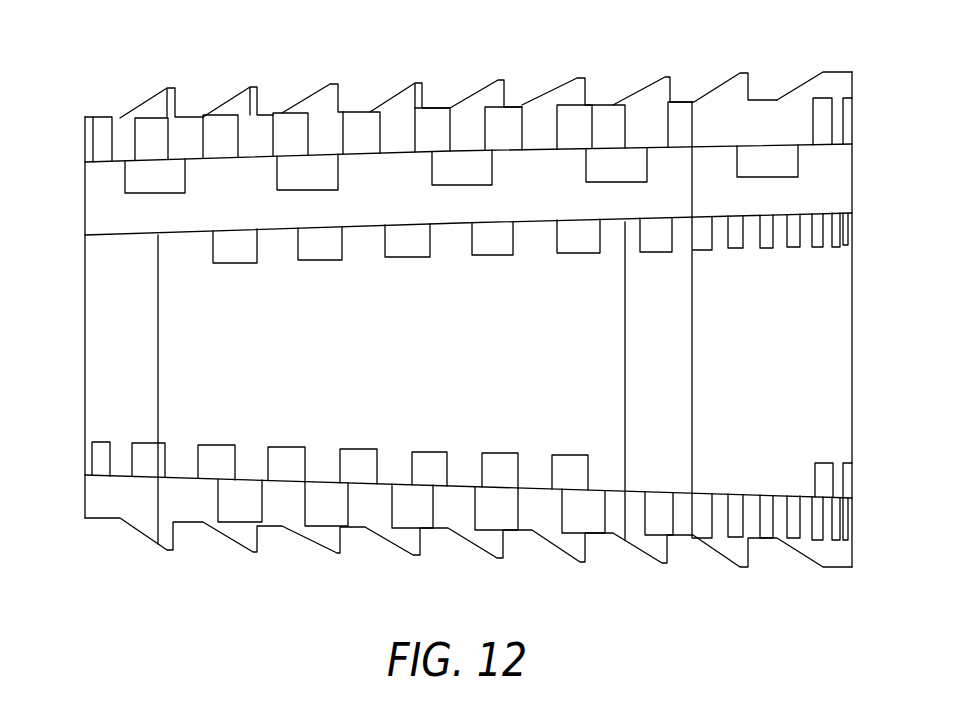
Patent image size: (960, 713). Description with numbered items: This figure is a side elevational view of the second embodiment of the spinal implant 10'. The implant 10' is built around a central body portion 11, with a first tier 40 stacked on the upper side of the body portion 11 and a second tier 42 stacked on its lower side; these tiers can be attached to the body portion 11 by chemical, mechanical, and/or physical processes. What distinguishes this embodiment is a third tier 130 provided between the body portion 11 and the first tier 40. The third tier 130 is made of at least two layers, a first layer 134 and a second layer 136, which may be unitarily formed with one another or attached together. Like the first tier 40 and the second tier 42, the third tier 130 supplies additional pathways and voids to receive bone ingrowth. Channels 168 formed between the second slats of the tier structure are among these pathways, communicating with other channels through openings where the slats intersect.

The implant 10' is at (472, 611).
The body portion 11 is at (853, 369).
The first tier 40 is at (853, 95).
The second tier 42 is at (853, 519).
The third tier 130 is at (853, 185).
The first layer 134 is at (103, 213).
The second layer 136 is at (85, 172).
The channels 168 is at (140, 173).